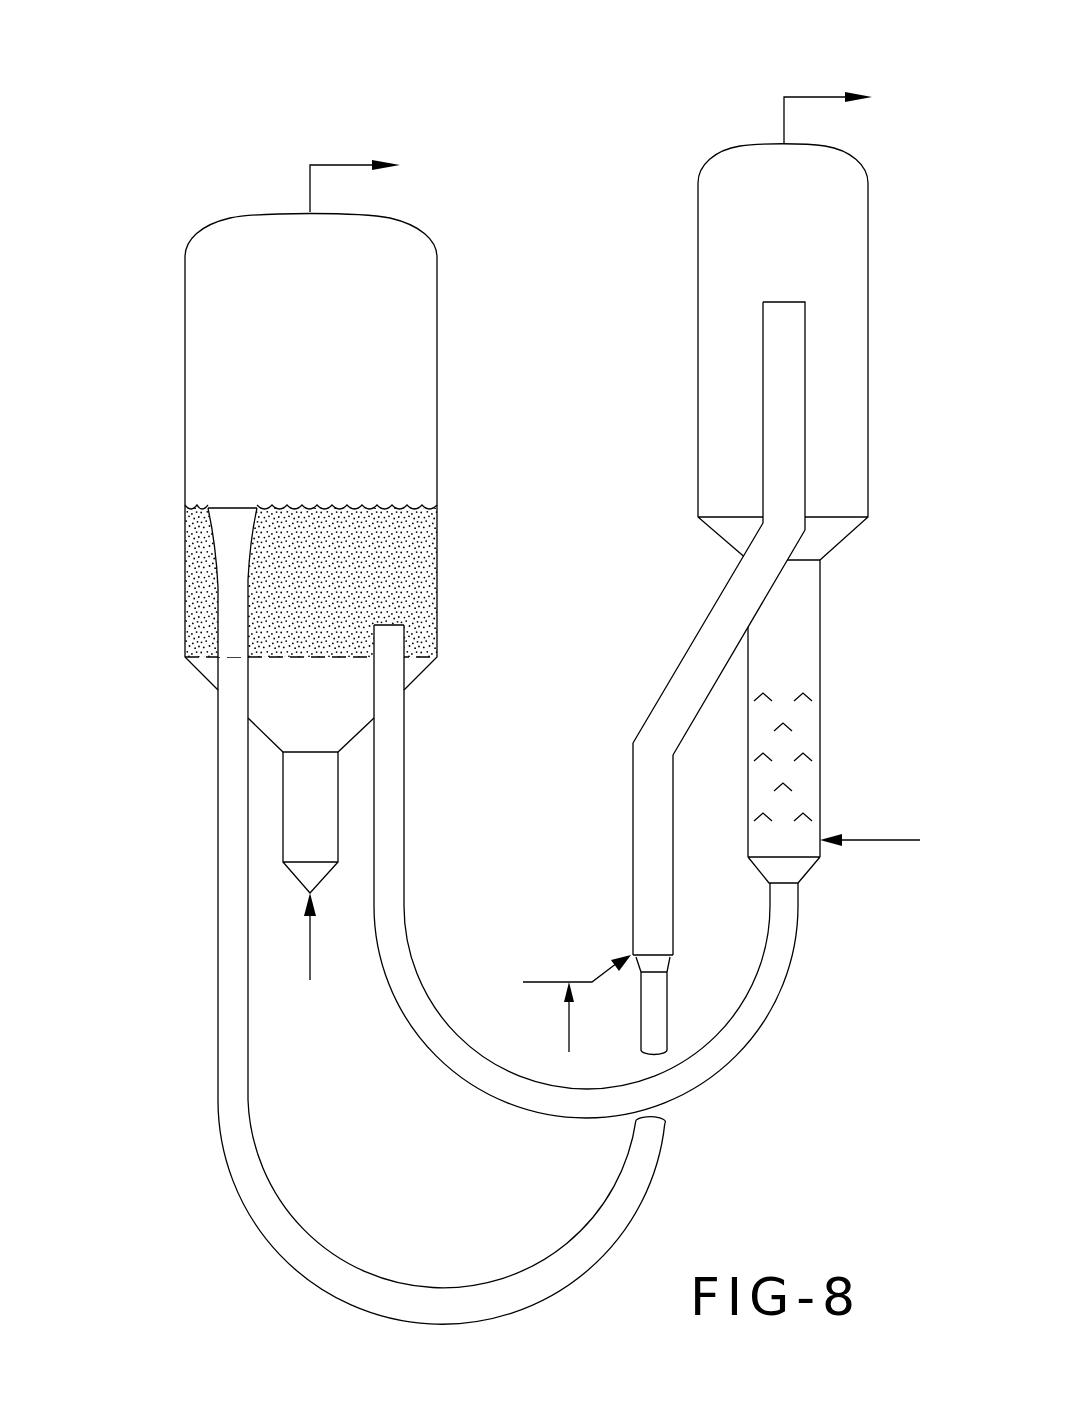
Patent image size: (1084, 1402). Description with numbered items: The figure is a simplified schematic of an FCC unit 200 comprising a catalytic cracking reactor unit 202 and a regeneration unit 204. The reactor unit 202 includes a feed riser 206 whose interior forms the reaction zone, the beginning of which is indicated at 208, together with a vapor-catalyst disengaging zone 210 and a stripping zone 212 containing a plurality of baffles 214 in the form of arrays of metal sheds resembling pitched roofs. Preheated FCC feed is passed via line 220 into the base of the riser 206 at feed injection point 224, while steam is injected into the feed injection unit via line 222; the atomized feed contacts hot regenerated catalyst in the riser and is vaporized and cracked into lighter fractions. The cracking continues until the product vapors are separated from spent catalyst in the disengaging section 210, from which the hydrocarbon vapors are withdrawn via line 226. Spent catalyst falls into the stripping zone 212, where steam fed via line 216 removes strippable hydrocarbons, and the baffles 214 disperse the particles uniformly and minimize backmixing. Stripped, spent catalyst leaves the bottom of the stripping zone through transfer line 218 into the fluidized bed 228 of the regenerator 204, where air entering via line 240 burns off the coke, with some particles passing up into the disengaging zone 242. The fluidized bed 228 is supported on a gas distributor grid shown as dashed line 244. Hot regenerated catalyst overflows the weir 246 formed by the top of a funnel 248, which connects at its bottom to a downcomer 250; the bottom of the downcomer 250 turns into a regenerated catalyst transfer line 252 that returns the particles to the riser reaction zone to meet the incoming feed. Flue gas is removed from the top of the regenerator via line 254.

The FCC unit 200 is at (188, 118).
The catalytic cracking reactor unit 202 is at (868, 238).
The regeneration unit 204 is at (437, 312).
The feed riser 206 is at (693, 637).
The beginning of the reaction zone 208 is at (651, 840).
The vapor-catalyst disengaging zone 210 is at (806, 262).
The stripping zone 212 is at (820, 618).
The baffles 214 is at (807, 750).
The stripping agent line 216 is at (883, 840).
The transfer line 218 is at (764, 1023).
The feed line 220 is at (550, 982).
The steam line 222 is at (569, 1040).
The feed injection point 224 is at (630, 950).
The hydrocarbon vapor withdrawal line 226 is at (818, 97).
The fluidized bed 228 is at (400, 580).
The air line 240 is at (310, 948).
The disengaging zone 242 is at (333, 403).
The gas distributor grid 244 is at (317, 657).
The weir 246 is at (226, 508).
The funnel 248 is at (210, 543).
The downcomer 250 is at (218, 627).
The regenerated catalyst transfer line 252 is at (432, 1295).
The flue gas line 254 is at (347, 165).